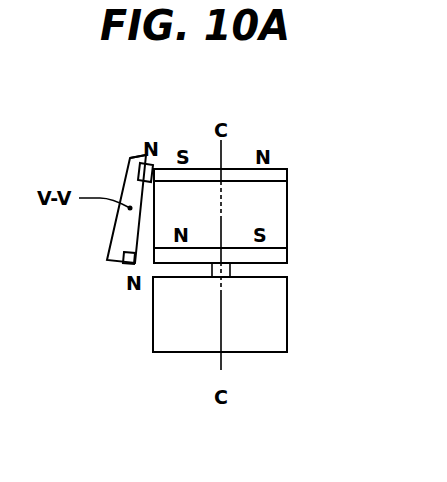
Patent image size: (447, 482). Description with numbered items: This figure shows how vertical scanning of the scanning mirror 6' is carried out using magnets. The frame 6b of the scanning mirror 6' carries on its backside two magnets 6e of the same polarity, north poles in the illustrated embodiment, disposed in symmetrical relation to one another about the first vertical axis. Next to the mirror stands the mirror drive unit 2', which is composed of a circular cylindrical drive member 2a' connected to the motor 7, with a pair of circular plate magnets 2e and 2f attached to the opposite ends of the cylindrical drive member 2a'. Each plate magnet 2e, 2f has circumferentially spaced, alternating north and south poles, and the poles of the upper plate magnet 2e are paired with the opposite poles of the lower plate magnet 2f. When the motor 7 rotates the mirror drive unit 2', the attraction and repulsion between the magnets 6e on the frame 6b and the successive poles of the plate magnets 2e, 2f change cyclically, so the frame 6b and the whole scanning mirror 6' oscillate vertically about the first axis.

The mirror drive unit 2' is at (259, 178).
The upper plate magnet 2e is at (287, 172).
The circular cylindrical drive member 2a' is at (259, 214).
The lower plate magnet 2f is at (283, 256).
The motor 7 is at (277, 339).
The scanning mirror 6' is at (126, 212).
The frame 6b is at (131, 158).
The magnets 6e is at (151, 164).